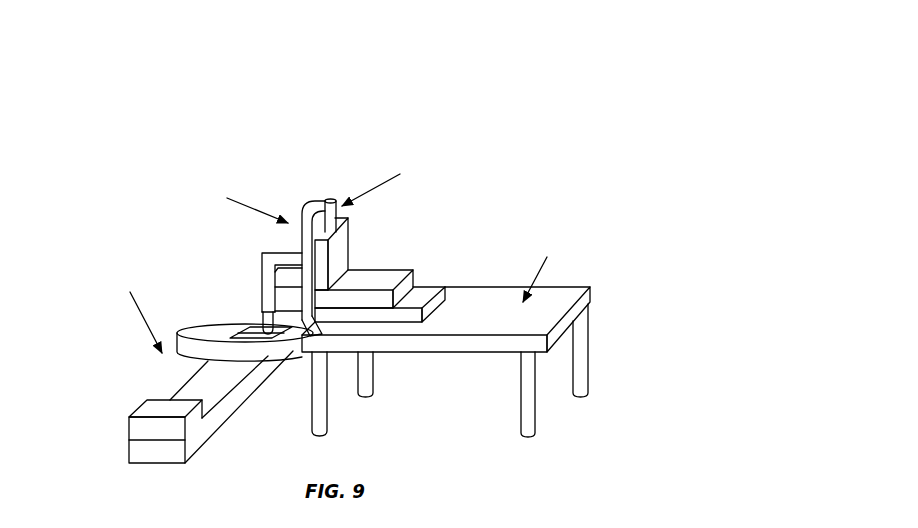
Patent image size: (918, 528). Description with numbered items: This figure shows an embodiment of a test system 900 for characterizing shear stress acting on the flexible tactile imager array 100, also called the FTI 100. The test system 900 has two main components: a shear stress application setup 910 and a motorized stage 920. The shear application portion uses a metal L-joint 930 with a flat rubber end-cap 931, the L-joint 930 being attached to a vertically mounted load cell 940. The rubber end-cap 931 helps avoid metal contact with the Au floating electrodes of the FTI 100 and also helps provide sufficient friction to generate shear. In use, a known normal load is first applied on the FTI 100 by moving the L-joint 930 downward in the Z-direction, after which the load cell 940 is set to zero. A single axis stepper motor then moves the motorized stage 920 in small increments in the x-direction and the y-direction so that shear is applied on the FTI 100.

The test system 900 is at (452, 50).
The shear stress application setup 910 is at (253, 132).
The motorized stage 920 is at (120, 249).
The metal L-joint 930 is at (261, 266).
The flat rubber end-cap 931 is at (287, 330).
The load cell 940 is at (265, 166).
The flexible tactile imager array 100 is at (255, 344).